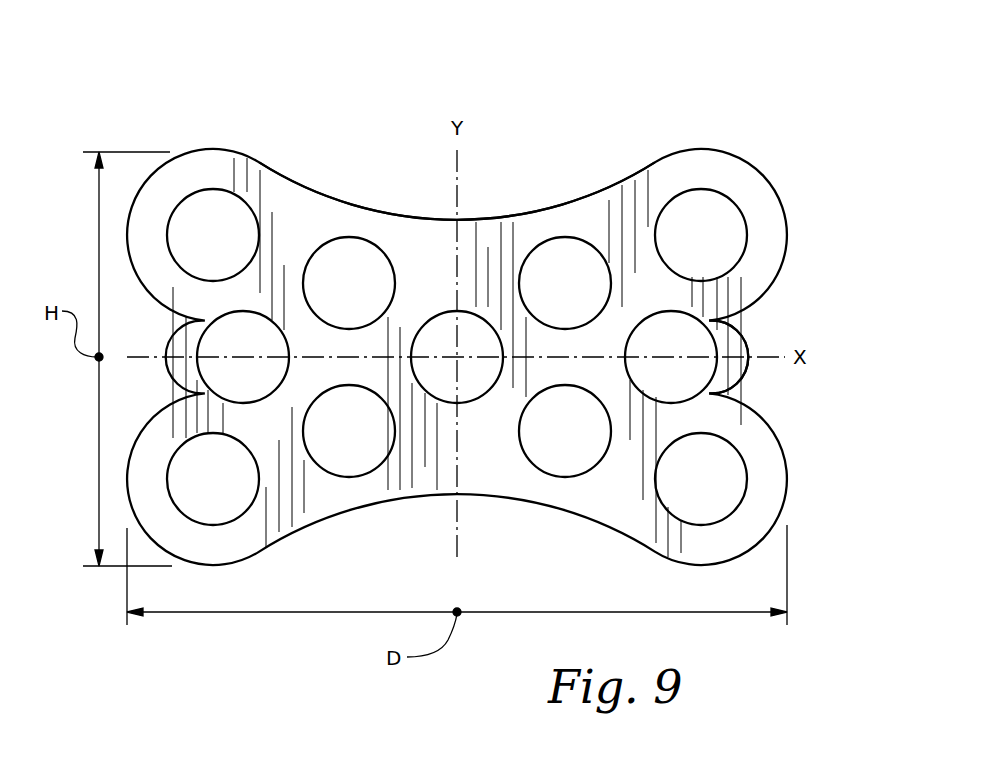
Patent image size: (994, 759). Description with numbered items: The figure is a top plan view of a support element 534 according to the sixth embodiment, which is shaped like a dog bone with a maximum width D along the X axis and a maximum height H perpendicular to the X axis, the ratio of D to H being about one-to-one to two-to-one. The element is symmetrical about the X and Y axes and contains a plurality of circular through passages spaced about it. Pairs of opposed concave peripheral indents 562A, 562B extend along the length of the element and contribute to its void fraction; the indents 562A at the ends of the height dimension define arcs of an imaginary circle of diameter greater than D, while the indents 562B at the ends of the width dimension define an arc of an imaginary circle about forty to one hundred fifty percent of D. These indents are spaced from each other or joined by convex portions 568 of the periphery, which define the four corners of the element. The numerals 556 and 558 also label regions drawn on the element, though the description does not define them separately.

The support element 534 is at (563, 137).
The first end lobe 556 is at (194, 176).
The second end lobe 558 is at (637, 438).
The concave peripheral indents 562A is at (382, 212).
The concave peripheral indents 562B is at (753, 330).
The convex portions 568 is at (767, 173).